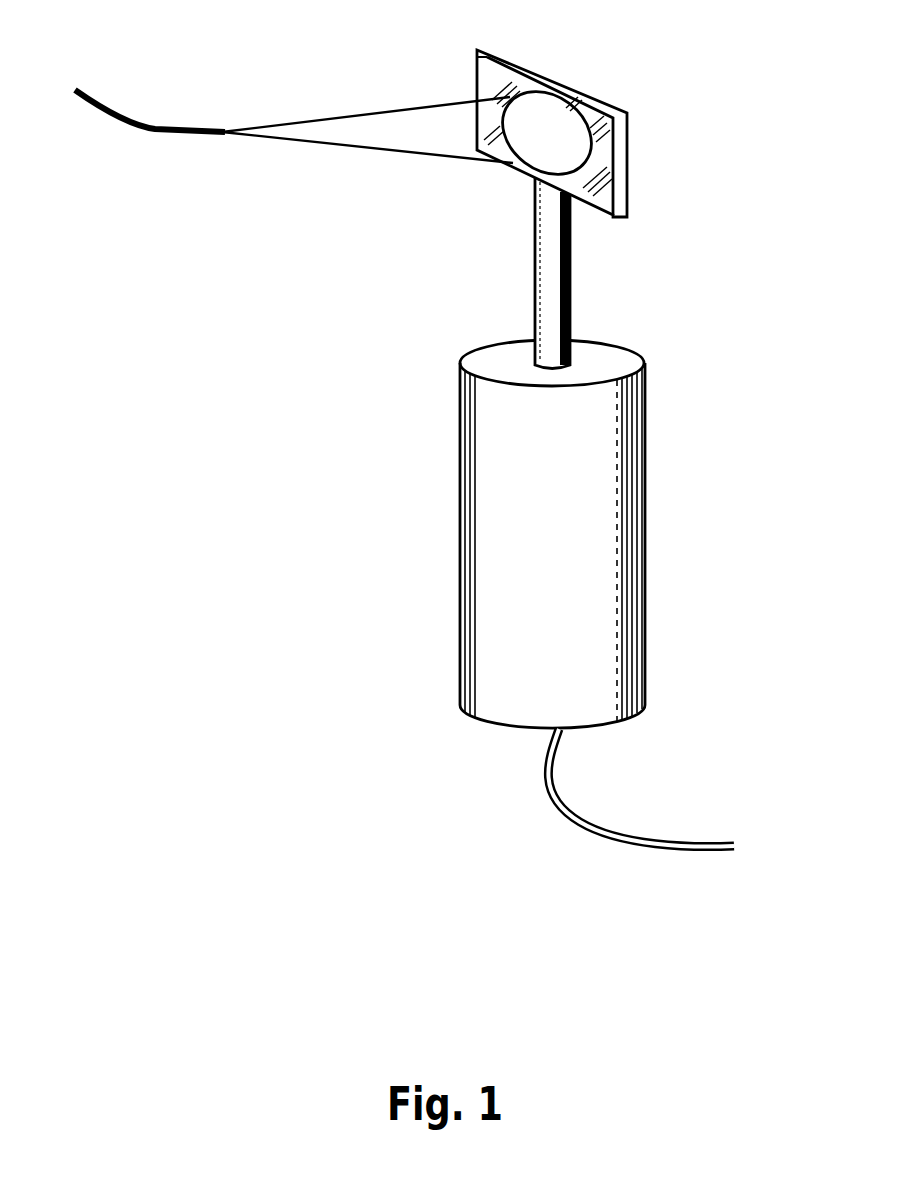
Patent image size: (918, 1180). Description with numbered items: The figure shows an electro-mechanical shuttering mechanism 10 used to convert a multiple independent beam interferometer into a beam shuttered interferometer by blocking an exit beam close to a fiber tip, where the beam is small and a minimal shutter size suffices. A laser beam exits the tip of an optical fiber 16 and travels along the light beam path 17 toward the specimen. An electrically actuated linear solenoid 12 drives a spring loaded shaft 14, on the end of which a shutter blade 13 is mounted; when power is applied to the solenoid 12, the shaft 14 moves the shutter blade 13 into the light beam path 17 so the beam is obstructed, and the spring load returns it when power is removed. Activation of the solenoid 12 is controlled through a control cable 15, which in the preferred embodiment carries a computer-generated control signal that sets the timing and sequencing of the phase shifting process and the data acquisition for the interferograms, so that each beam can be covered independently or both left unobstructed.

The electro-mechanical shuttering mechanism 10 is at (280, 506).
The linear solenoid 12 is at (658, 533).
The shutter blade 13 is at (641, 146).
The spring loaded shaft 14 is at (583, 285).
The control cable 15 is at (668, 788).
The optical fiber 16 is at (141, 138).
The light beam path 17 is at (285, 88).